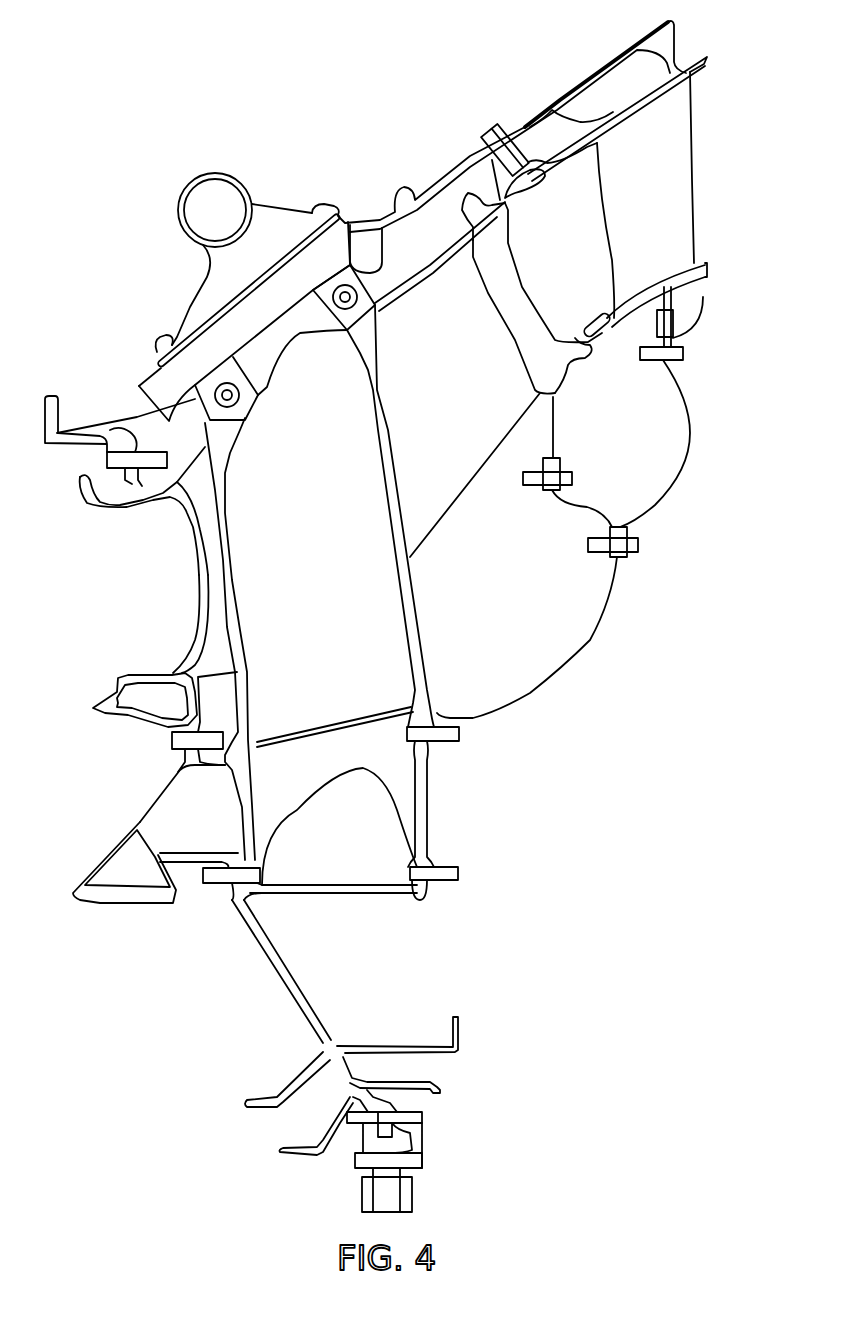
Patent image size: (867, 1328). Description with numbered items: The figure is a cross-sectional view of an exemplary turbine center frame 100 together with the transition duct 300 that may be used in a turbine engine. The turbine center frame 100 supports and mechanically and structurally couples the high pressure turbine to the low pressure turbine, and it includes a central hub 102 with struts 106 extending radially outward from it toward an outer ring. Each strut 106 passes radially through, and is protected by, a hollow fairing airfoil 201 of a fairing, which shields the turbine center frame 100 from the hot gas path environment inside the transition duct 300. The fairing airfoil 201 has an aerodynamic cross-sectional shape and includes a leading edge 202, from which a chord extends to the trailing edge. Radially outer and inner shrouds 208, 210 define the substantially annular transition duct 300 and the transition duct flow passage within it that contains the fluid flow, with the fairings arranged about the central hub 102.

The turbine center frame 100 is at (347, 900).
The central hub 102 is at (350, 884).
The strut 106 is at (226, 600).
The fairing airfoil 201 is at (197, 547).
The leading edge 202 is at (195, 612).
The radially outer shroud 208 is at (430, 270).
The radially inner shroud 210 is at (457, 503).
The transition duct 300 is at (663, 437).